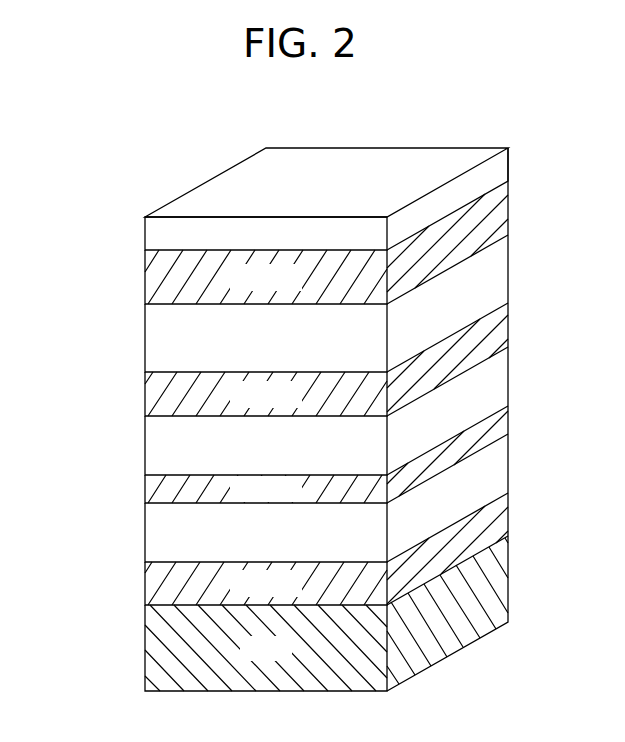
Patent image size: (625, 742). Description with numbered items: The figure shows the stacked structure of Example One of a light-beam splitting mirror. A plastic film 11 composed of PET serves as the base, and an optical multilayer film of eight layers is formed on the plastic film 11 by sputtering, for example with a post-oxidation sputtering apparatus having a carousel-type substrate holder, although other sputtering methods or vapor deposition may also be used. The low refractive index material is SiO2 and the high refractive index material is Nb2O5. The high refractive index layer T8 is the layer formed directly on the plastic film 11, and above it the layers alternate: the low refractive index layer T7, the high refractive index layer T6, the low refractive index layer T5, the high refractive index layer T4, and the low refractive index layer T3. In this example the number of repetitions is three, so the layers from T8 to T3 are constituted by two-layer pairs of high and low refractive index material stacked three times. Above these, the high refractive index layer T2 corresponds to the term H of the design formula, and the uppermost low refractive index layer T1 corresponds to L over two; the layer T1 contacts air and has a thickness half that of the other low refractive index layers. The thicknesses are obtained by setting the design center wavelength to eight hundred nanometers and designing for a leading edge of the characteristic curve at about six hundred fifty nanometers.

The low refractive index layer T1 is at (145, 233).
The high refractive index layer T2 is at (145, 275).
The low refractive index layer T3 is at (145, 336).
The high refractive index layer T4 is at (145, 392).
The low refractive index layer T5 is at (145, 443).
The high refractive index layer T6 is at (145, 487).
The low refractive index layer T7 is at (145, 530).
The high refractive index layer T8 is at (145, 581).
The plastic film 11 is at (145, 646).